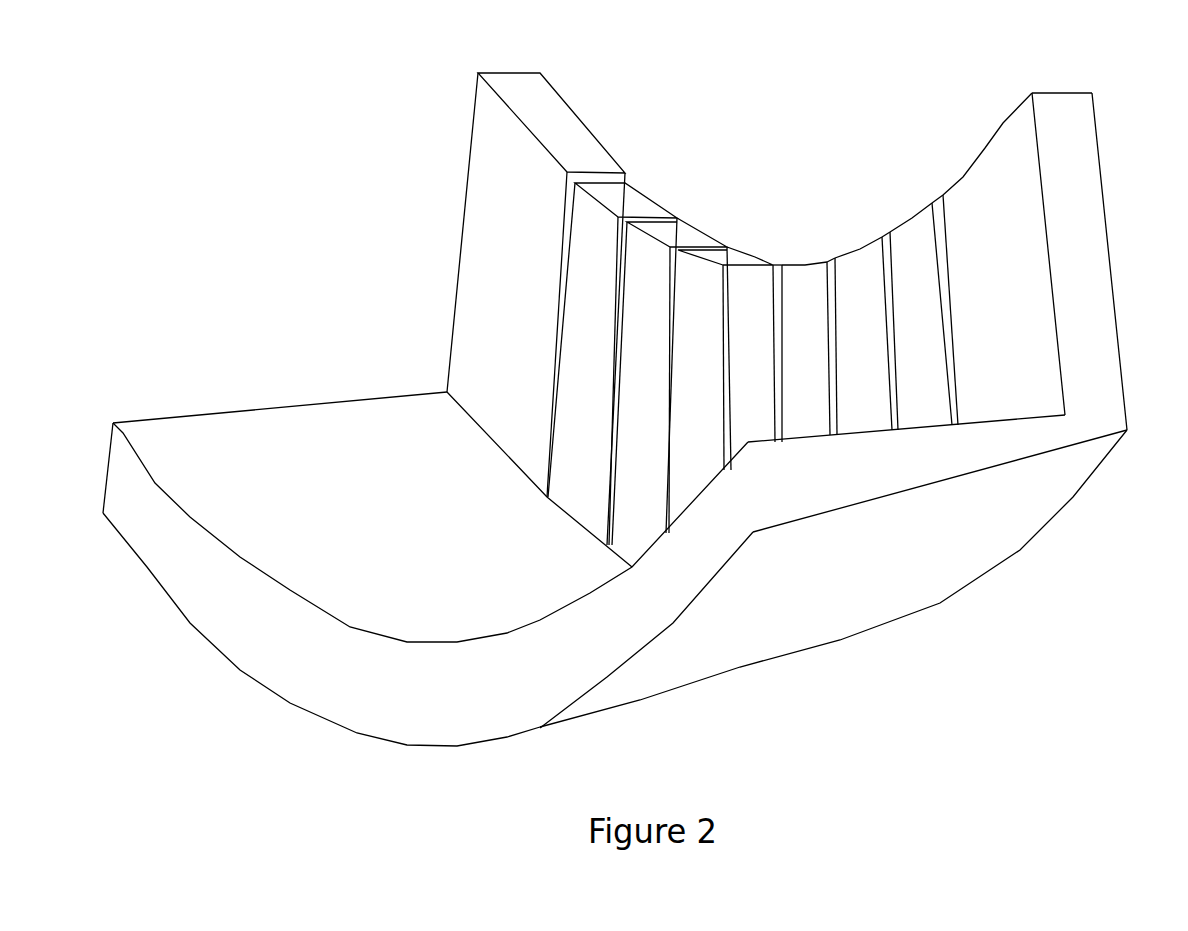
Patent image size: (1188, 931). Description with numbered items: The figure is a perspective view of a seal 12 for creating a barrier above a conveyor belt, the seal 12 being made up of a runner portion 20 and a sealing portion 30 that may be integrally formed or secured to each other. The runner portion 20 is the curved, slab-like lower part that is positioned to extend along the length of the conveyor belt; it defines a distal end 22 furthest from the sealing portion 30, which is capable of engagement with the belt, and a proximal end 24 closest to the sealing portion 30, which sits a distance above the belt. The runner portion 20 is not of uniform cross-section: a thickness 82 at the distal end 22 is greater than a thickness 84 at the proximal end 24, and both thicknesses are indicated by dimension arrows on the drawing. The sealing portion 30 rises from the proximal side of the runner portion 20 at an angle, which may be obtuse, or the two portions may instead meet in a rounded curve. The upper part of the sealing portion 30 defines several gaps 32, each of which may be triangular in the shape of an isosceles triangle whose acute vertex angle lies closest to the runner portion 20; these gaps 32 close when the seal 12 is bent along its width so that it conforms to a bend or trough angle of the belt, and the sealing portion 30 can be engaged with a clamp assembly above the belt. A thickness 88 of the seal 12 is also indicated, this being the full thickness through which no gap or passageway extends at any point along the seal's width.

The seal 12 is at (190, 205).
The runner portion 20 is at (430, 517).
The distal end 22 is at (615, 584).
The proximal end 24 is at (795, 473).
The sealing portion 30 is at (536, 309).
The gap 32 is at (732, 247).
The thickness of the distal end 82 is at (748, 445).
The thickness of the proximal end 84 is at (1068, 417).
The thickness of the seal 88 is at (1090, 123).